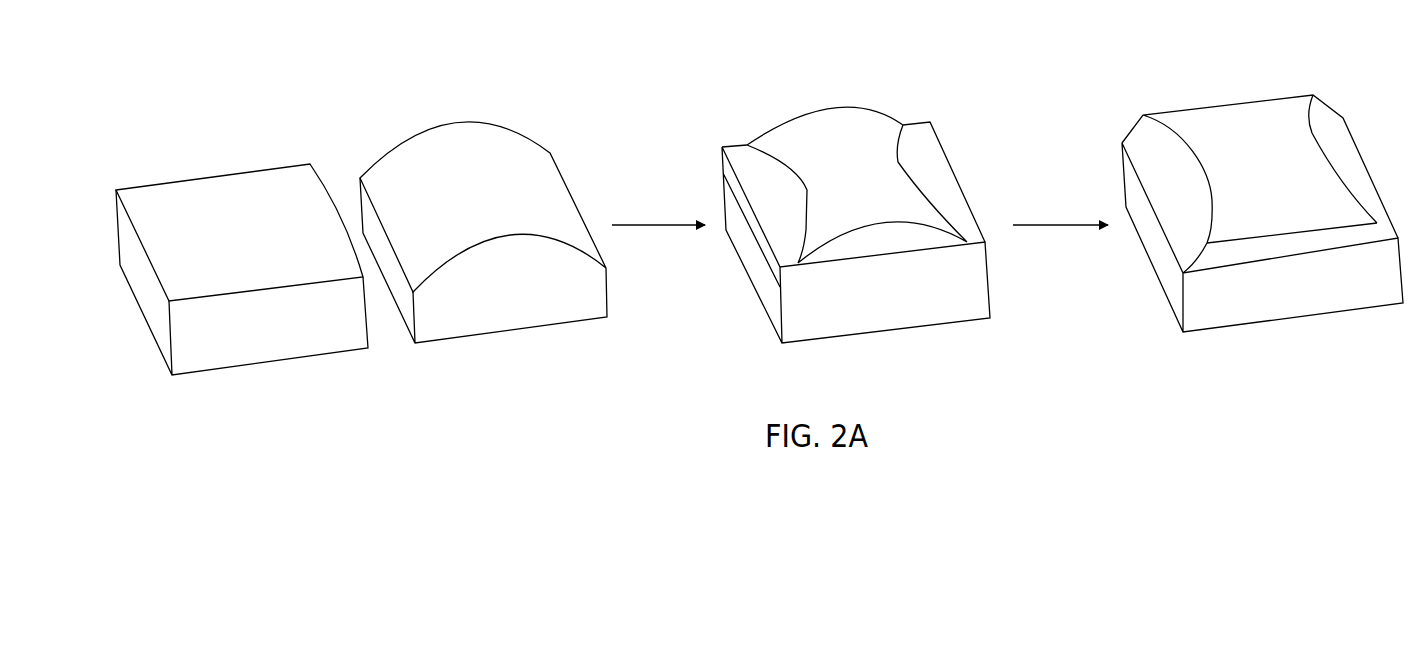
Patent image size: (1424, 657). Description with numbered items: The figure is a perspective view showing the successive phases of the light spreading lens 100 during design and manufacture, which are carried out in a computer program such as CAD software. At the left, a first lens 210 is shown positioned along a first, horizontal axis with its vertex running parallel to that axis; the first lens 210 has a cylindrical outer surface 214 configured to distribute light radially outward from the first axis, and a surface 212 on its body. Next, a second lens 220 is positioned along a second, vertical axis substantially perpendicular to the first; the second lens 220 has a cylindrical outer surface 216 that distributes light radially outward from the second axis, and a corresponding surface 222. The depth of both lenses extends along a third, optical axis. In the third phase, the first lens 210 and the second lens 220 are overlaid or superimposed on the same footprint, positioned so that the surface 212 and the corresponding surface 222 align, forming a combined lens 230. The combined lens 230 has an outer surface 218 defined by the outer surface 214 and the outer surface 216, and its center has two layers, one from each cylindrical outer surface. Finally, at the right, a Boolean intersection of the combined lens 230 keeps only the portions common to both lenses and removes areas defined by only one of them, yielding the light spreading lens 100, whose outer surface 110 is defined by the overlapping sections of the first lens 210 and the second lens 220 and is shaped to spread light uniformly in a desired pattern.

The light spreading lens 100 is at (1262, 166).
The outer surface 110 is at (1238, 122).
The first lens 210 is at (242, 264).
The surface of the first lens 212 is at (272, 337).
The cylindrical outer surface 214 is at (282, 187).
The cylindrical outer surface 216 is at (517, 147).
The outer surface of the combined lens 218 is at (875, 127).
The second lens 220 is at (483, 226).
The surface of the second lens 222 is at (510, 305).
The combined lens 230 is at (856, 190).